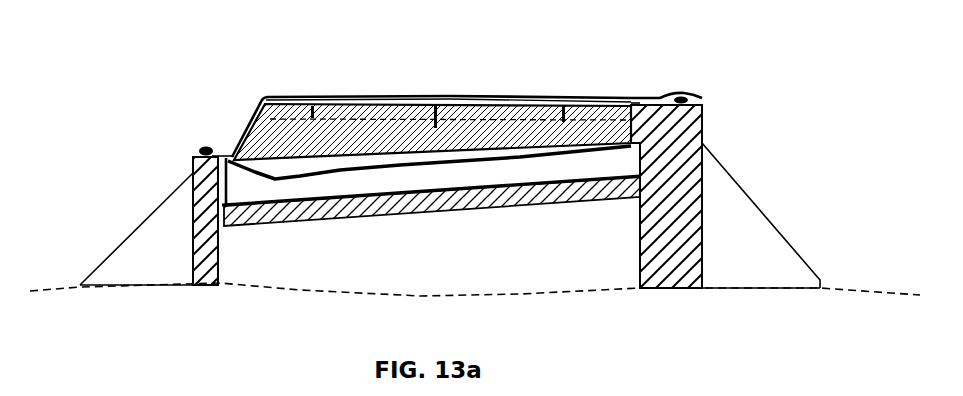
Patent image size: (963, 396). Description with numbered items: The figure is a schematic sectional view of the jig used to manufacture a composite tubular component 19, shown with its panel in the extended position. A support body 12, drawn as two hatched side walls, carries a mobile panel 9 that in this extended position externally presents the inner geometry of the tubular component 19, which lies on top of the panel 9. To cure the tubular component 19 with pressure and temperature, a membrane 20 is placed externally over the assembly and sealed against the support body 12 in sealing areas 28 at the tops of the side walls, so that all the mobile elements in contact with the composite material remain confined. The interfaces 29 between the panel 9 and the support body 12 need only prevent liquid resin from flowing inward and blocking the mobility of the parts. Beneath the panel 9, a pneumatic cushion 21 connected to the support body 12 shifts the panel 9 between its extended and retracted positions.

The mobile panel 9 is at (494, 121).
The support body 12 is at (180, 170).
The tubular component 19 is at (381, 89).
The membrane 20 is at (278, 89).
The pneumatic cushion 21 is at (526, 170).
The sealing area 28 is at (184, 143).
The interface 29 is at (225, 141).